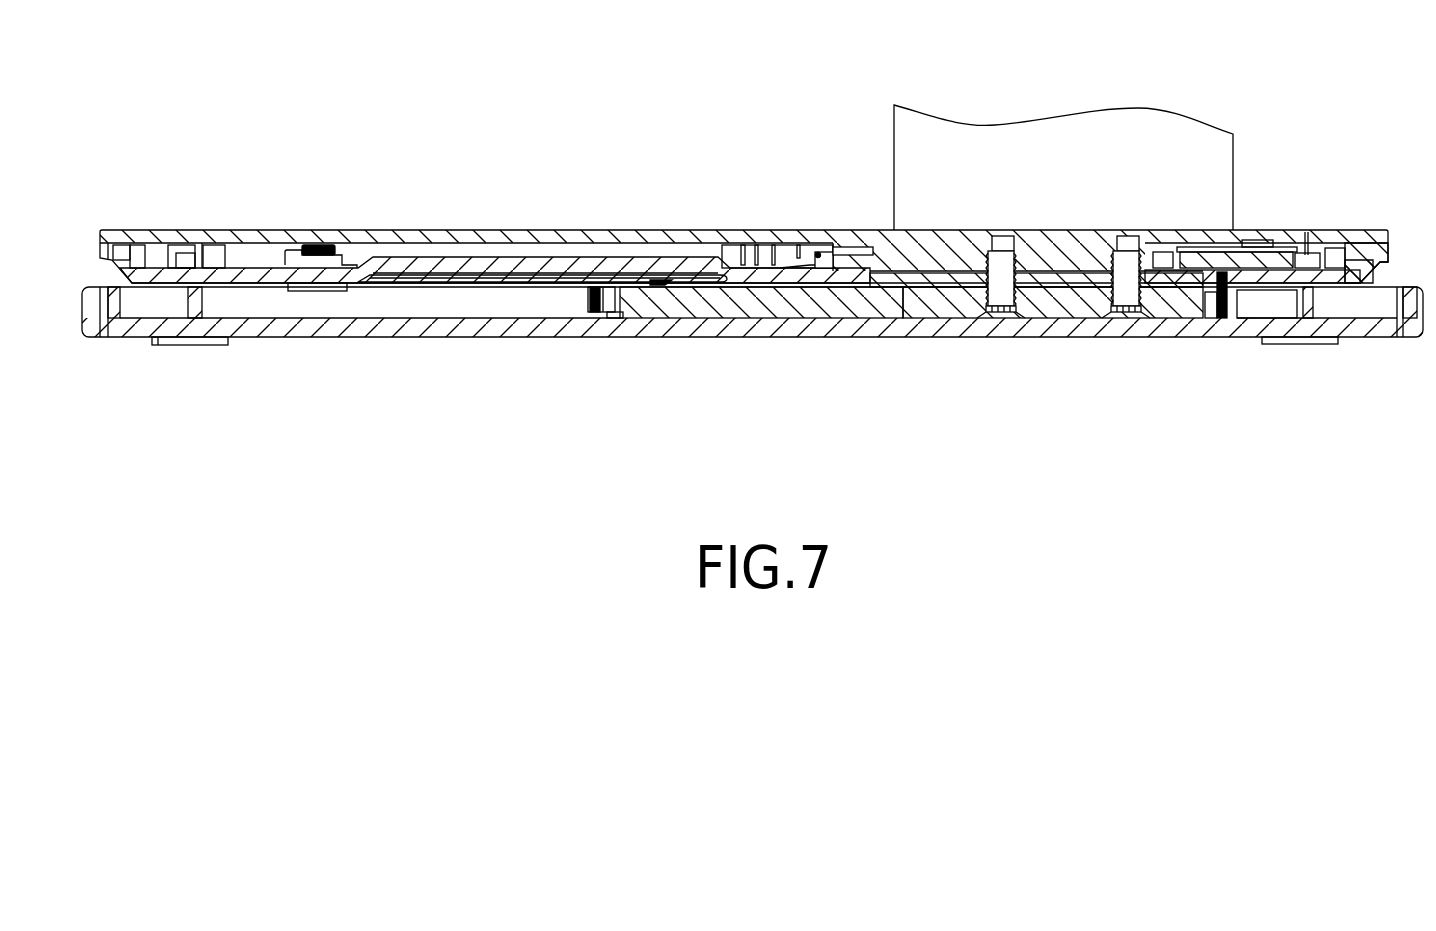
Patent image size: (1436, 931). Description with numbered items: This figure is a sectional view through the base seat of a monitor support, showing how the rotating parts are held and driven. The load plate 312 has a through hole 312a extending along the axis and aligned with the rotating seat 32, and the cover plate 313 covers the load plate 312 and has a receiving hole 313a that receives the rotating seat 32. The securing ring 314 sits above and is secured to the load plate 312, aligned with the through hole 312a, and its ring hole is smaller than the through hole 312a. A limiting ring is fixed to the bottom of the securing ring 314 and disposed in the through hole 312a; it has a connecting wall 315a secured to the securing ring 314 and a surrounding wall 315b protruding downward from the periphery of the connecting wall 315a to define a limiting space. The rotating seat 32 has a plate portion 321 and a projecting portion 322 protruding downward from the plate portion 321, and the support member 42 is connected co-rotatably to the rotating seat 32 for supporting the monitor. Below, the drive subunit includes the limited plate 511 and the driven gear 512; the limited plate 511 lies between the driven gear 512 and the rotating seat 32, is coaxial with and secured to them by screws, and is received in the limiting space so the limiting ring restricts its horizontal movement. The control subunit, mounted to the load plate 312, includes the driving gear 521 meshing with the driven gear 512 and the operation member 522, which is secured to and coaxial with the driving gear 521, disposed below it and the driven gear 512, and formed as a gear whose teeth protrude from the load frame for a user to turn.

The rotating seat 32 is at (1265, 206).
The support member 42 is at (1058, 155).
The load plate 312 is at (455, 262).
The through hole 312a is at (1237, 280).
The cover plate 313 is at (563, 240).
The receiving hole 313a is at (818, 252).
The securing ring 314 is at (875, 262).
The connecting wall 315a is at (1226, 280).
The surrounding wall 315b is at (1229, 290).
The plate portion 321 is at (1175, 242).
The projecting portion 322 is at (1147, 248).
The limited plate 511 is at (948, 283).
The driven gear 512 is at (962, 303).
The driving gear 521 is at (700, 298).
The operation member 522 is at (470, 327).